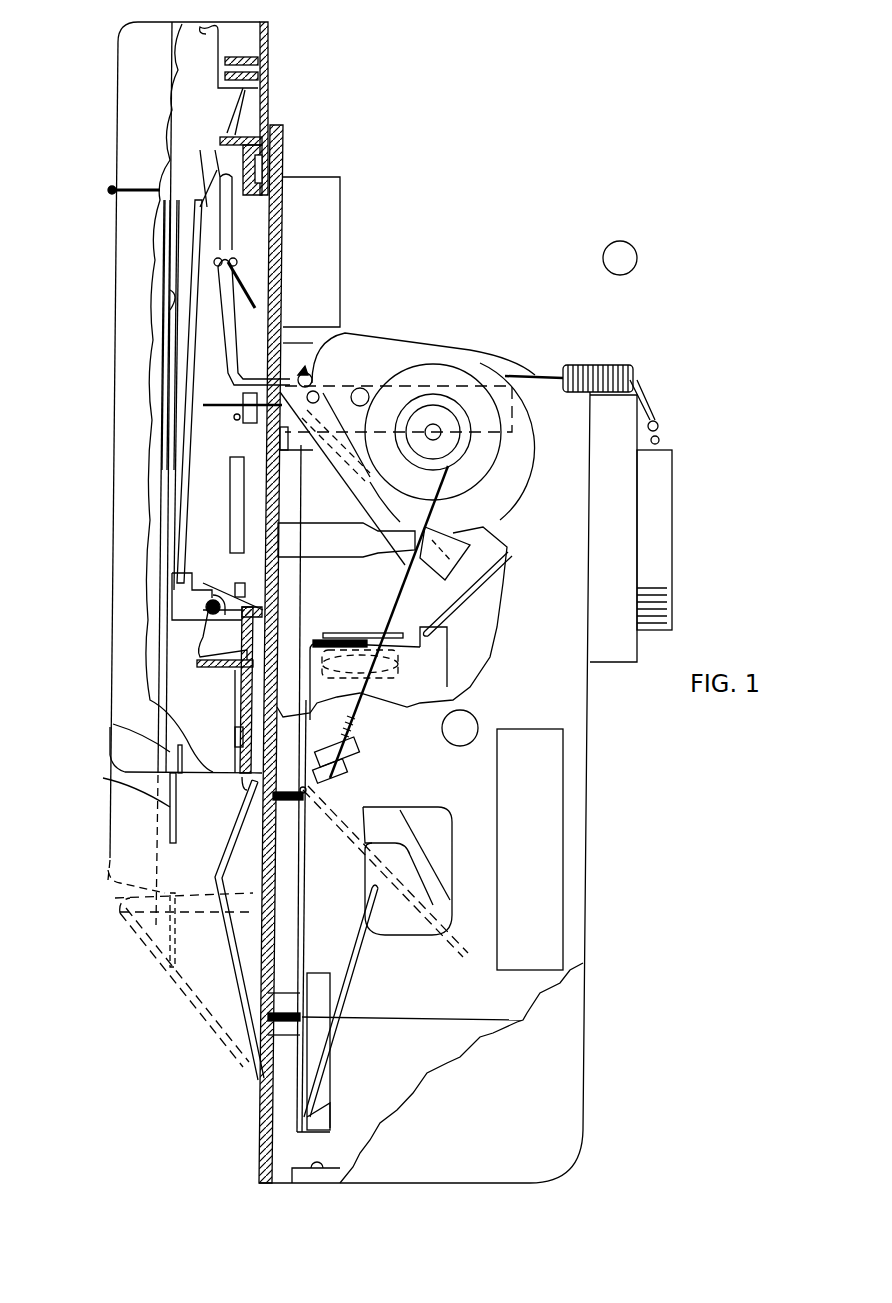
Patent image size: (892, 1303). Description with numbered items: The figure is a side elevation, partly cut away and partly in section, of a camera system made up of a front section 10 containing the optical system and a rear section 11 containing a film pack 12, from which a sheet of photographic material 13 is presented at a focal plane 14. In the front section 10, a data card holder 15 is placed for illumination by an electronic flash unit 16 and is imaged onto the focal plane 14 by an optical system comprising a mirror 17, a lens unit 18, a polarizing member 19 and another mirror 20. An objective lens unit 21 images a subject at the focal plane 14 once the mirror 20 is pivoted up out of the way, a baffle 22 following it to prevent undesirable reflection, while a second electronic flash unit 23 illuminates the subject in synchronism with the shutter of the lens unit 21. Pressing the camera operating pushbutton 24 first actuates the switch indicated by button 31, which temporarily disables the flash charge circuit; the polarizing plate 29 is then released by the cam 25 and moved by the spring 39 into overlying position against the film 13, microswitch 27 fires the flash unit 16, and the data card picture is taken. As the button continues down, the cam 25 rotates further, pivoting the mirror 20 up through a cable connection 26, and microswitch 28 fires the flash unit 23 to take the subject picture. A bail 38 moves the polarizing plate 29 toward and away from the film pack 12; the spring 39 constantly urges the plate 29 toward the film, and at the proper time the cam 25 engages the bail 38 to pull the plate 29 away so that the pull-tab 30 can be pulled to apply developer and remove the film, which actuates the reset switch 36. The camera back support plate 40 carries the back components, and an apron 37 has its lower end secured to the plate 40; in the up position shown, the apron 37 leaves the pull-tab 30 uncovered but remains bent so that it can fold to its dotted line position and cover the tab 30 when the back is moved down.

The front section 10 is at (690, 470).
The rear section 11 is at (118, 113).
The film pack 12 is at (160, 243).
The sheet of photographic material 13 is at (170, 277).
The focal plane 14 is at (178, 312).
The data card holder 15 is at (543, 830).
The electronic flash unit 16 is at (473, 720).
The mirror 17 is at (345, 808).
The lens unit 18 is at (390, 680).
The polarizing member 19 is at (366, 633).
The mirror 20 is at (512, 368).
The objective lens unit 21 is at (658, 532).
The baffle 22 is at (470, 598).
The second electronic flash unit 23 is at (640, 258).
The camera operating pushbutton 24 is at (303, 927).
The cam 25 is at (430, 342).
The cable connection 26 is at (400, 585).
The microswitch 27 is at (435, 812).
The microswitch 28 is at (312, 1176).
The polarizing plate 29 is at (192, 401).
The pull-tab 30 is at (112, 782).
The switch button 31 is at (373, 890).
The switch 36 is at (113, 726).
The apron 37 is at (230, 948).
The bail 38 is at (230, 342).
The spring 39 is at (243, 288).
The camera back support plate 40 is at (286, 143).